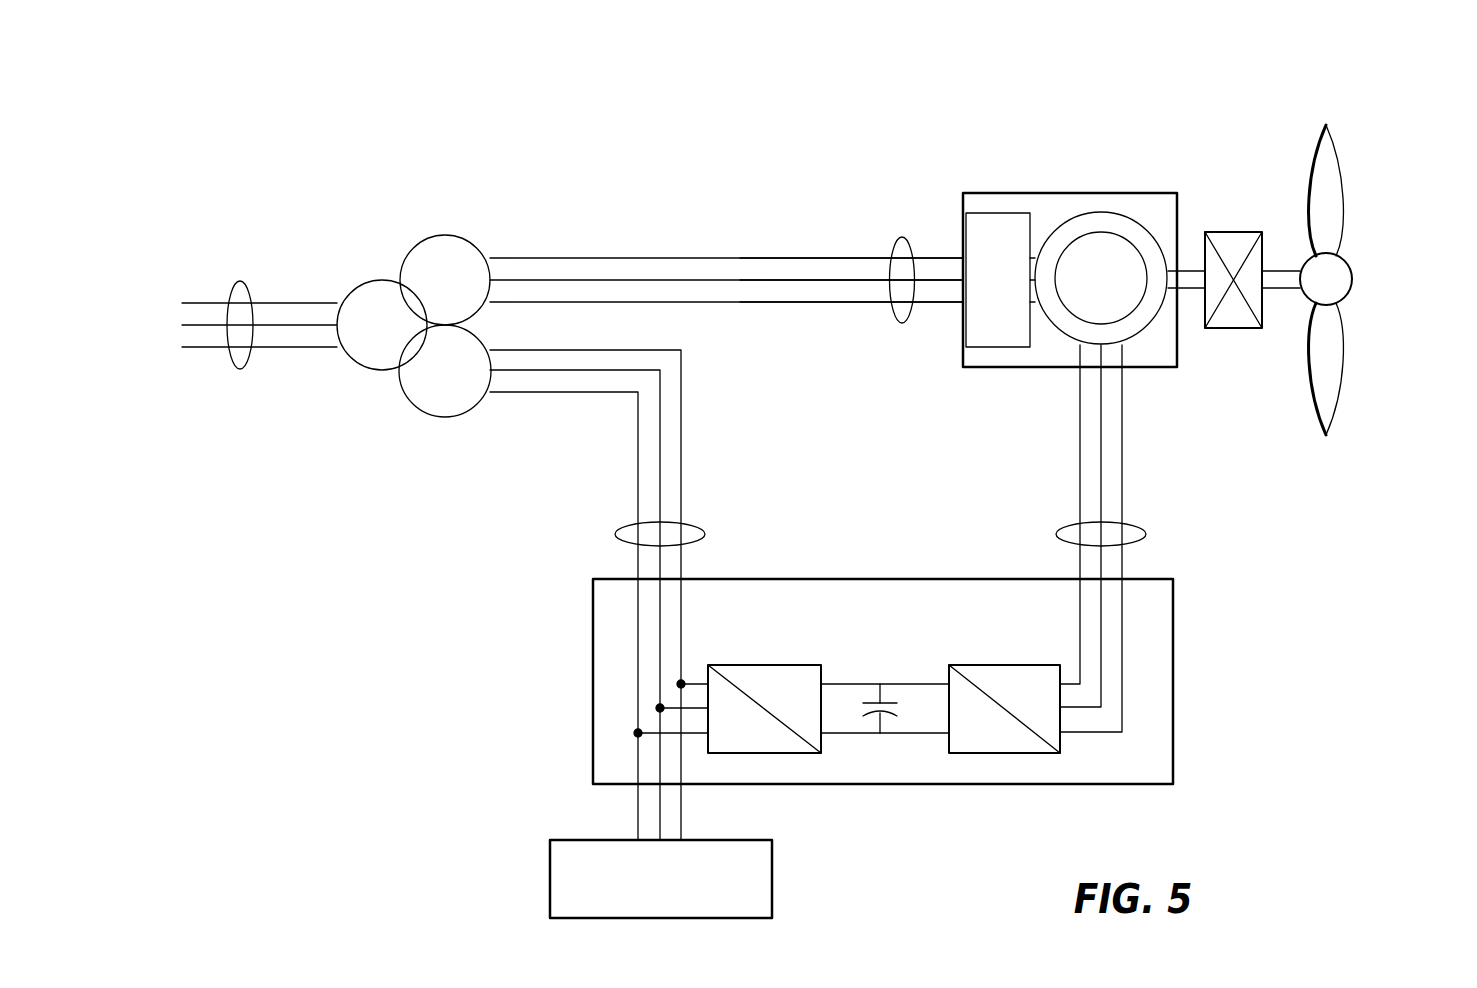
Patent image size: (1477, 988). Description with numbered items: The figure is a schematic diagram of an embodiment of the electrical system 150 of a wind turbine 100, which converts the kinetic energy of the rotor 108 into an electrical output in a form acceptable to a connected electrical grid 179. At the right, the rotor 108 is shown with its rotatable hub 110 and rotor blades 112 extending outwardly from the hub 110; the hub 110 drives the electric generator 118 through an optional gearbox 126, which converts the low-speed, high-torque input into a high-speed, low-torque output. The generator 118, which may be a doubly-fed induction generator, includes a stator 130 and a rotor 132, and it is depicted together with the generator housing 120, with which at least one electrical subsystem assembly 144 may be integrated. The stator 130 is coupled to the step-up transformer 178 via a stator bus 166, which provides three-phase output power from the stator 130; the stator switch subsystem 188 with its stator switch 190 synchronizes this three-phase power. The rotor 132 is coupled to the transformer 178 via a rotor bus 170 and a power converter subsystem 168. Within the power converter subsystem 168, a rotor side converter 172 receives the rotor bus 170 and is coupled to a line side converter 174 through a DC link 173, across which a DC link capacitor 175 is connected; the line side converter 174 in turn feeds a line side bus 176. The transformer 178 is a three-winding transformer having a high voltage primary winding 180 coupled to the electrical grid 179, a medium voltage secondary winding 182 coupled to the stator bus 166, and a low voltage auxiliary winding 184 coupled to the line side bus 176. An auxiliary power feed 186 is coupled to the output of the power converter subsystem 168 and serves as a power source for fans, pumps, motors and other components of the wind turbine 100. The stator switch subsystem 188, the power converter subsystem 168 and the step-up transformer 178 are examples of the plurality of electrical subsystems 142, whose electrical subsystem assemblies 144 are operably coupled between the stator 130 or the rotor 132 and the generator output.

The wind turbine 100 is at (1385, 63).
The rotor 108 is at (1372, 183).
The rotatable hub 110 is at (1352, 290).
The rotor blade 112 is at (1340, 232).
The electric generator 118 is at (1063, 222).
The generator housing 120 is at (1178, 342).
The gearbox 126 is at (1232, 232).
The stator 130 is at (1093, 211).
The rotor 132 is at (1127, 237).
The electrical subsystems 142 is at (320, 156).
The electrical subsystem assemblies 144 is at (928, 548).
The electrical system 150 is at (160, 172).
The stator bus 166 is at (902, 238).
The power converter subsystem 168 is at (1173, 662).
The rotor bus 170 is at (1147, 534).
The rotor side converter 172 is at (1008, 753).
The DC link 173 is at (851, 684).
The line side converter 174 is at (790, 753).
The DC link capacitor 175 is at (897, 713).
The line side bus 176 is at (705, 534).
The step-up transformer 178 is at (407, 206).
The electrical grid 179 is at (240, 282).
The primary winding 180 is at (370, 280).
The secondary winding 182 is at (455, 236).
The auxiliary winding 184 is at (452, 418).
The auxiliary power feed 186 is at (590, 840).
The stator switch subsystem 188 is at (975, 150).
The stator switch 190 is at (968, 332).